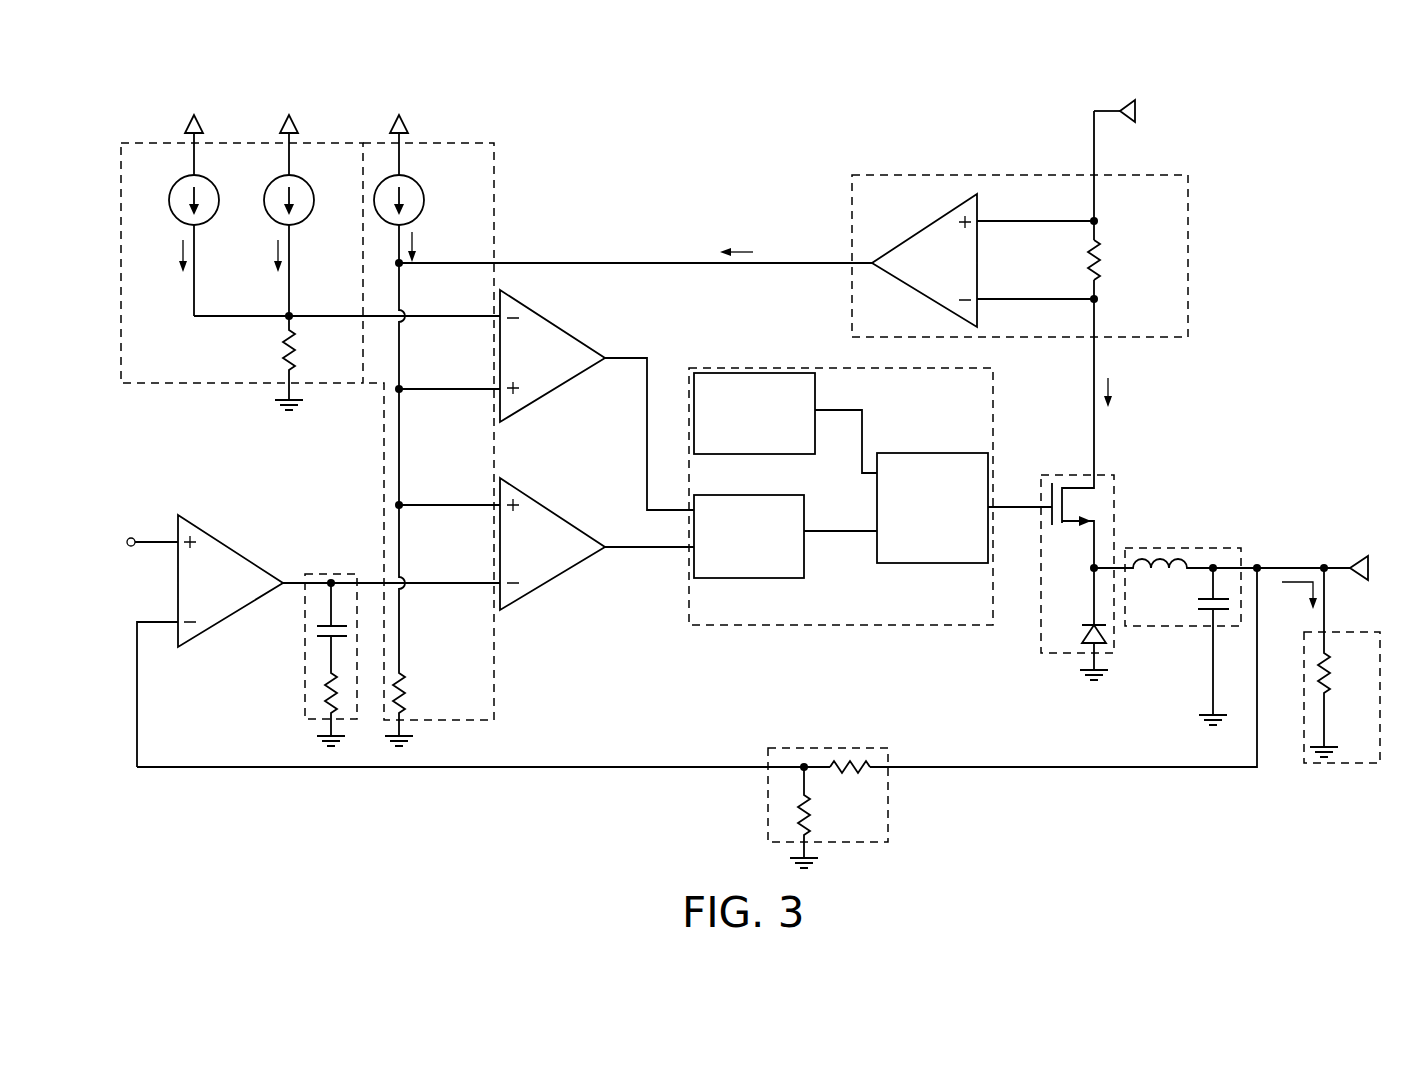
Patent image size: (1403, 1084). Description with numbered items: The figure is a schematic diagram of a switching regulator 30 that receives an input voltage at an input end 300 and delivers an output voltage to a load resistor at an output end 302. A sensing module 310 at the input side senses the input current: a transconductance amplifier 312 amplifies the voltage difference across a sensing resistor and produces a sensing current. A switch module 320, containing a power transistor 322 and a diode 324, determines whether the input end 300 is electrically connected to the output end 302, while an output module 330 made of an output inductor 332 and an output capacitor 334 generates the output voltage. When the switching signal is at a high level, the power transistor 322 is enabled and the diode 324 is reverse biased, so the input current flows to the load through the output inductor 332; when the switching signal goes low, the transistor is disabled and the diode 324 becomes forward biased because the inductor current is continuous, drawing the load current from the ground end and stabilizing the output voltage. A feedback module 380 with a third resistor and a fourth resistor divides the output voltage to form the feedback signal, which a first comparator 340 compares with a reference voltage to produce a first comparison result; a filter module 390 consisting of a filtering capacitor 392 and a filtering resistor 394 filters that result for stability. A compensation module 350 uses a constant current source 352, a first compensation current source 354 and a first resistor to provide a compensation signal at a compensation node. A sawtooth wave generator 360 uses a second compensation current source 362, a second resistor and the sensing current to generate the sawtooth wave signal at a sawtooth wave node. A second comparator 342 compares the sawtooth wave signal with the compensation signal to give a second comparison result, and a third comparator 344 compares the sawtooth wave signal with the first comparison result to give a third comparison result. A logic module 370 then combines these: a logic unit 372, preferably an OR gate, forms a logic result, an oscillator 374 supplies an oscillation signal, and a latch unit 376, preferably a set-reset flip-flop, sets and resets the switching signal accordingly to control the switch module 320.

The switching regulator 30 is at (1268, 165).
The input end 300 is at (1128, 122).
The output end 302 is at (1362, 580).
The sensing module 310 is at (885, 175).
The transconductance amplifier 312 is at (917, 233).
The switch module 320 is at (1045, 652).
The power transistor 322 is at (1087, 506).
The diode 324 is at (1104, 645).
The output module 330 is at (1210, 548).
The output inductor 332 is at (1144, 560).
The output capacitor 334 is at (1198, 607).
The first comparator 340 is at (221, 540).
The second comparator 342 is at (543, 396).
The third comparator 344 is at (543, 584).
The compensation module 350 is at (160, 143).
The constant current source 352 is at (211, 182).
The first compensation current source 354 is at (306, 182).
The sawtooth wave generator 360 is at (476, 143).
The second compensation current source 362 is at (416, 182).
The logic module 370 is at (772, 368).
The logic unit 372 is at (765, 578).
The oscillator 374 is at (765, 454).
The latch unit 376 is at (938, 453).
The feedback module 380 is at (803, 748).
The filter module 390 is at (303, 702).
The filtering capacitor 392 is at (317, 631).
The filtering resistor 394 is at (325, 683).